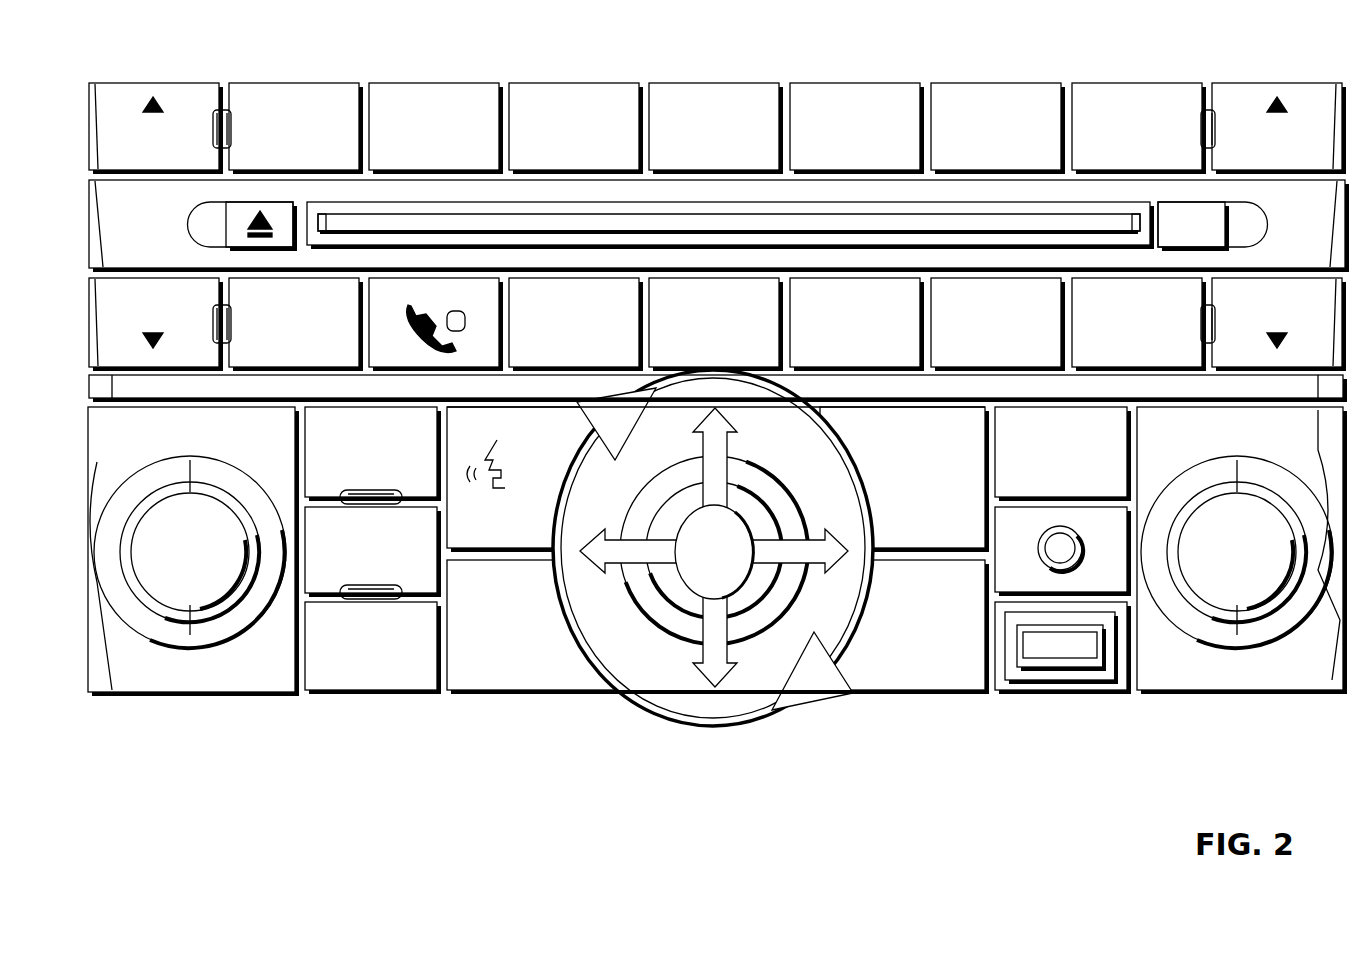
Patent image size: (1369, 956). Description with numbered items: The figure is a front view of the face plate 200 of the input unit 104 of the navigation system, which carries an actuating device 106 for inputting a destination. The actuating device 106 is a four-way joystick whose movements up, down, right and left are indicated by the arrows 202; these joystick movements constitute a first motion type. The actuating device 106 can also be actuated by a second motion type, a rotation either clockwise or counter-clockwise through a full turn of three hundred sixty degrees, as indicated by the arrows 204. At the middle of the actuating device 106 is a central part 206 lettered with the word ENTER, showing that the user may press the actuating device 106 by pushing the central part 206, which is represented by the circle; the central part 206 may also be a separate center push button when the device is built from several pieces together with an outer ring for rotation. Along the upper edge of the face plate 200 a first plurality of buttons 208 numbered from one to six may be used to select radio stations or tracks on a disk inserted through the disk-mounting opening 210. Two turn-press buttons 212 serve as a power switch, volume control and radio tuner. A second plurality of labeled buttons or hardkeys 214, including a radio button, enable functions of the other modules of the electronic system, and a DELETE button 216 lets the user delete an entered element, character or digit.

The face plate 200 is at (806, 32).
The input unit 104 is at (1053, 83).
The first plurality of buttons 208 is at (422, 94).
The disk-mounting opening 210 is at (610, 216).
The second plurality of buttons or hardkeys 214 is at (773, 280).
The turn-press buttons 212 is at (190, 560).
The DELETE button 216 is at (975, 692).
The arrows indicating rotation motion 204 is at (613, 392).
The actuating device 106 is at (640, 643).
The arrows indicating joystick directions 202 is at (702, 440).
The central part 206 is at (707, 567).